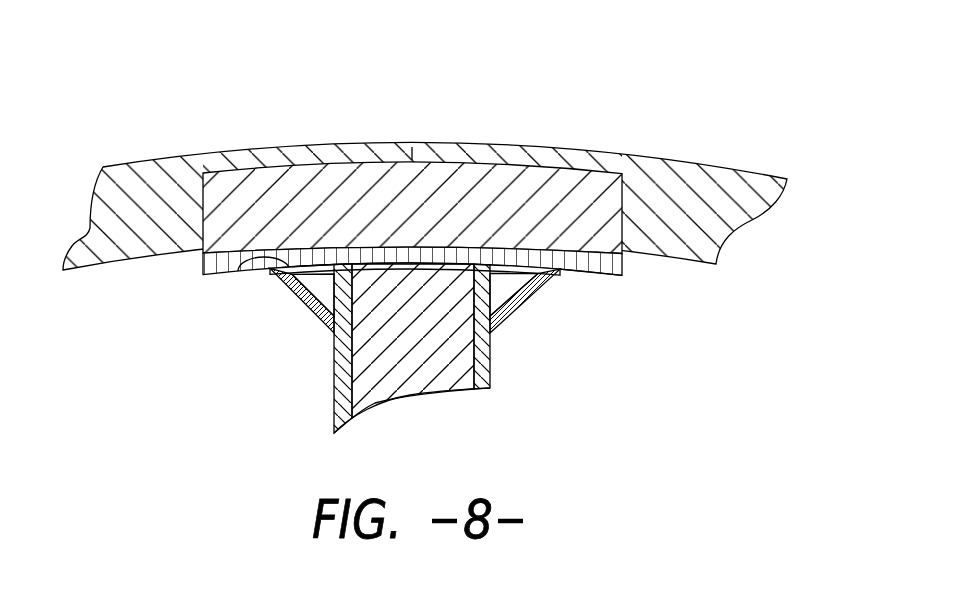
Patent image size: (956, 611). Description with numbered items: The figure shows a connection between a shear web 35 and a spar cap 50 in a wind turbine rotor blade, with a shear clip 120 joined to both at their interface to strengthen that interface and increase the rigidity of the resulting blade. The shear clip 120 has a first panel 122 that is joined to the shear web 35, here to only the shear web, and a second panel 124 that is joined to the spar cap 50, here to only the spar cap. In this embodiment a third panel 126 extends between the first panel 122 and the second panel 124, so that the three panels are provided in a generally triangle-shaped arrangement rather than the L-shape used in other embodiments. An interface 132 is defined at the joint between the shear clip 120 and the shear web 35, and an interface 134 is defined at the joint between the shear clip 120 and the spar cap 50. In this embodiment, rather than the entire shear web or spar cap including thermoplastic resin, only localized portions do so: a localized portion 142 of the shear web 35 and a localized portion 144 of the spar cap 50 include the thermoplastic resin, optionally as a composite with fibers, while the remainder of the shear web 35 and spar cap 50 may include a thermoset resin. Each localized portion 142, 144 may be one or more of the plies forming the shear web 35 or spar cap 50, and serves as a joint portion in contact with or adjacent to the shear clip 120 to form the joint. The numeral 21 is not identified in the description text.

The panel 21 is at (155, 190).
The spar cap 50 is at (242, 197).
The shear web 35 is at (455, 363).
The shear clip 120 is at (287, 315).
The first panel 122 is at (339, 271).
The second panel 124 is at (238, 271).
The third panel 126 is at (282, 285).
The interface 132 is at (343, 303).
The interface 134 is at (305, 270).
The localized portion 142 is at (335, 397).
The localized portion 144 is at (590, 273).